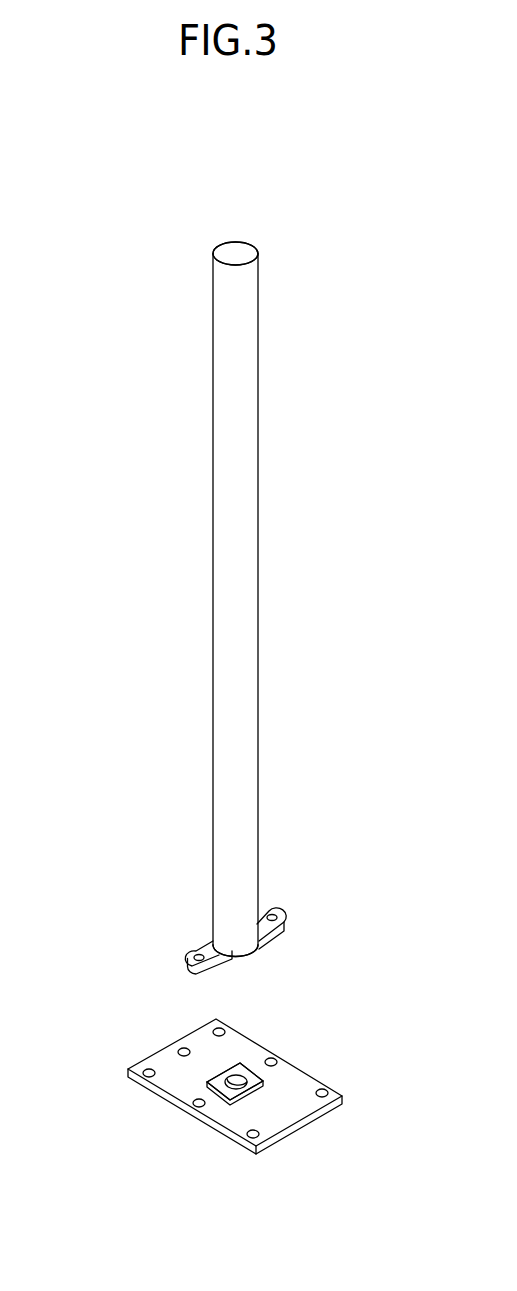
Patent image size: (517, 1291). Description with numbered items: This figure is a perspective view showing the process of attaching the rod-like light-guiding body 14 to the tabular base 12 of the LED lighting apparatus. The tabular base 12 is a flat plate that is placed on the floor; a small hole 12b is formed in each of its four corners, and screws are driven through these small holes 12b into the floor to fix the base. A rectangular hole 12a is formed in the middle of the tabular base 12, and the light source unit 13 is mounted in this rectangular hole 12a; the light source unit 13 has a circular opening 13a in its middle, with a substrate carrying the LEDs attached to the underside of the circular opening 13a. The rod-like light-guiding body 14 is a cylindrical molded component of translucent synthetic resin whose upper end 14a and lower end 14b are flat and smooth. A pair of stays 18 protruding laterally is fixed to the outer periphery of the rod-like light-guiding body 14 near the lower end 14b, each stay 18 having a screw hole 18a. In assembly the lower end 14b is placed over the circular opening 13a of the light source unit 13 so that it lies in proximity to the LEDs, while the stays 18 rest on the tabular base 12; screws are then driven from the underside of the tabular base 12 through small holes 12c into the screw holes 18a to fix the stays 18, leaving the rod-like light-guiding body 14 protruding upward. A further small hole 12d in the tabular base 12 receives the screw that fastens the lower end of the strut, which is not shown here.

The tabular base 12 is at (338, 1090).
The rectangular hole 12a is at (243, 1072).
The small hole 12b is at (146, 1069).
The small hole 12c is at (195, 1105).
The small hole 12d is at (182, 1049).
The light source unit 13 is at (226, 1092).
The circular opening 13a is at (237, 1086).
The rod-like light-guiding body 14 is at (258, 582).
The upper end 14a is at (240, 253).
The lower end 14b is at (248, 957).
The stay 18 is at (205, 946).
The screw hole 18a is at (197, 957).